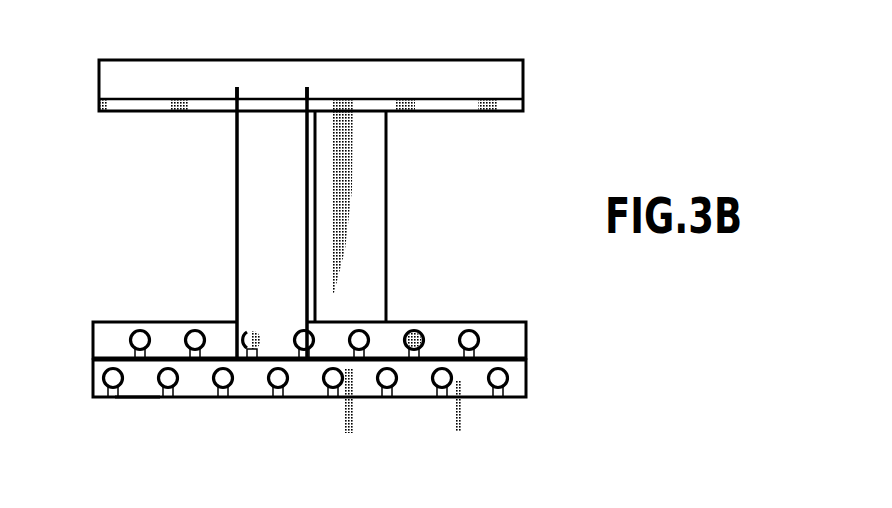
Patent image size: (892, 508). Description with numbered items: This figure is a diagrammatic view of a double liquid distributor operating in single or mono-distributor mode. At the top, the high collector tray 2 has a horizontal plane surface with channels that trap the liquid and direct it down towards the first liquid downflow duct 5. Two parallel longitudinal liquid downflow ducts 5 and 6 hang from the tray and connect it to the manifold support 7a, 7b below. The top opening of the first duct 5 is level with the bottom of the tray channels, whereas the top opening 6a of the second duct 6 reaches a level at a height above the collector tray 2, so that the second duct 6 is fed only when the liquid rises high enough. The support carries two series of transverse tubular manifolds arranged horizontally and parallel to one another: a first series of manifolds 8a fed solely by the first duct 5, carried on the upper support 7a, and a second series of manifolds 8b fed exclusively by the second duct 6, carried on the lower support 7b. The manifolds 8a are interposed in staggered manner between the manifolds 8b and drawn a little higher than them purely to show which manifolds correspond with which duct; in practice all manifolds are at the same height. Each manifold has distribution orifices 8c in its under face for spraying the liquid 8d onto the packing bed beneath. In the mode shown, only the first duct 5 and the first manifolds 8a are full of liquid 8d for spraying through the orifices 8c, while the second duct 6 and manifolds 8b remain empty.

The high collector tray 2 is at (128, 113).
The first longitudinal liquid downflow duct 5 is at (365, 192).
The second longitudinal liquid downflow duct 6 is at (260, 192).
The top opening of the second duct 6a is at (270, 105).
The manifold support 7a is at (107, 333).
The manifold support 7b is at (95, 388).
The first series of manifolds 8a is at (142, 330).
The second series of manifolds 8b is at (115, 393).
The distribution orifices 8c is at (148, 353).
The liquid 8d is at (135, 420).